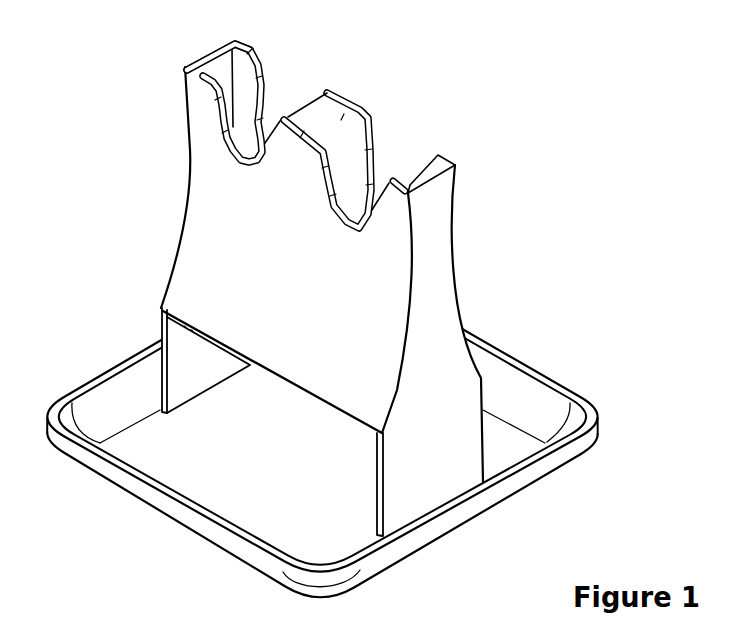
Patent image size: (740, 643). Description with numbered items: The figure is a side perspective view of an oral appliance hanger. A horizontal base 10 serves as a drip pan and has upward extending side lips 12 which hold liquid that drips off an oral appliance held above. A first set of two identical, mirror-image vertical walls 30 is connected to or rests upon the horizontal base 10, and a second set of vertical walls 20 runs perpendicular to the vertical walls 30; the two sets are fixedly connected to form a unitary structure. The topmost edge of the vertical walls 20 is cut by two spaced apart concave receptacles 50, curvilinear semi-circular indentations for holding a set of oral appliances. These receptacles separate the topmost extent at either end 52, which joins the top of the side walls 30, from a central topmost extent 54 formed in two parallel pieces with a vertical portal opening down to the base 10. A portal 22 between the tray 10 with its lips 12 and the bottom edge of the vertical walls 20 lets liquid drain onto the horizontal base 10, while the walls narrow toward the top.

The horizontal base 10 is at (143, 442).
The side lips 12 is at (102, 462).
The vertical walls 20 is at (205, 237).
The portal 22 is at (255, 378).
The vertical walls 30 is at (222, 70).
The concave receptacles 50 is at (281, 105).
The end topmost extent 52 is at (203, 53).
The central topmost extent 54 is at (328, 92).